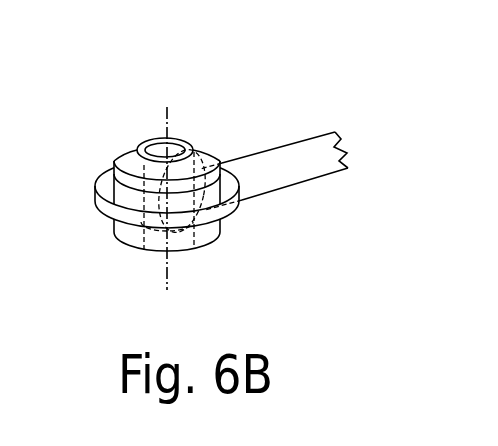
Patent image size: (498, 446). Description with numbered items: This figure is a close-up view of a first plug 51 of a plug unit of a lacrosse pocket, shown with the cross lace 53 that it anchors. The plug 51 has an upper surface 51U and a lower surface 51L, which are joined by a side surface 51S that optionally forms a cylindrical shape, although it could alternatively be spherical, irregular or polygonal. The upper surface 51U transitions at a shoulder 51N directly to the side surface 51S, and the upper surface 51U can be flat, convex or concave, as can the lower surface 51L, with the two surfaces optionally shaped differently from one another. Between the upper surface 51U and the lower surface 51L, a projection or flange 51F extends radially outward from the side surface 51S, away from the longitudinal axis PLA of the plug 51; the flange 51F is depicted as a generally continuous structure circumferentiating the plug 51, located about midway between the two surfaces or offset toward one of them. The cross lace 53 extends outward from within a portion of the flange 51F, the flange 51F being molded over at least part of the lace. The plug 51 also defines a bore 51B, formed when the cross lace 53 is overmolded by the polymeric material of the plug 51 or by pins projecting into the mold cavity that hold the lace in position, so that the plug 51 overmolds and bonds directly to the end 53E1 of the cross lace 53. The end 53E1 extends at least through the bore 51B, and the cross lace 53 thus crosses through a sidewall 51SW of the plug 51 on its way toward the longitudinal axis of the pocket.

The first plug 51 is at (75, 127).
The upper surface 51U is at (137, 150).
The shoulder 51N is at (132, 153).
The side surface 51S is at (118, 193).
The flange 51F is at (232, 217).
The lower surface 51L is at (133, 240).
The bore 51B is at (178, 254).
The sidewall 51SW is at (212, 237).
The longitudinal axis PLA is at (167, 265).
The cross lace 53 is at (286, 152).
The end of cross lace 53E1 is at (192, 150).